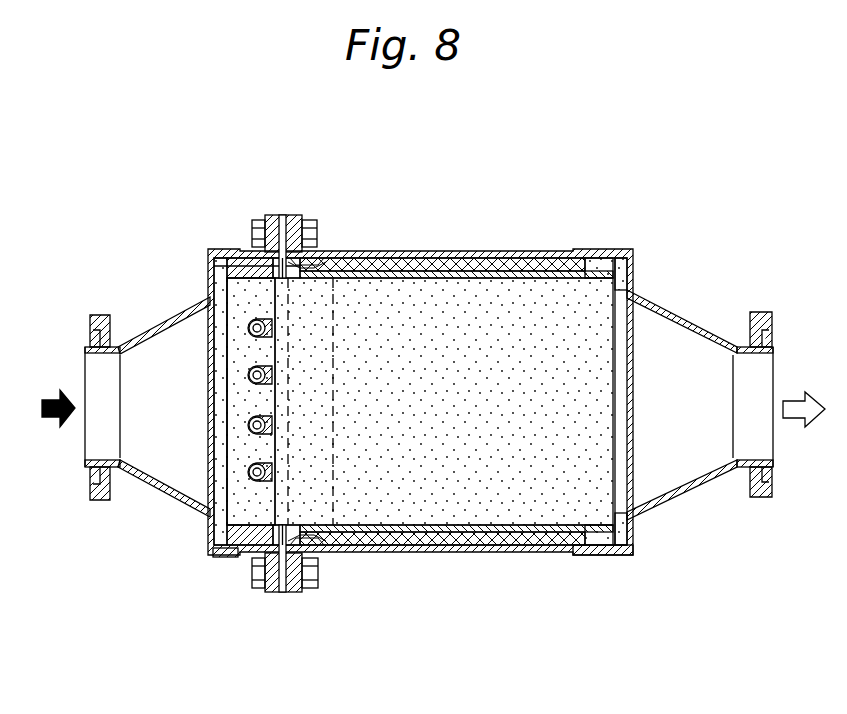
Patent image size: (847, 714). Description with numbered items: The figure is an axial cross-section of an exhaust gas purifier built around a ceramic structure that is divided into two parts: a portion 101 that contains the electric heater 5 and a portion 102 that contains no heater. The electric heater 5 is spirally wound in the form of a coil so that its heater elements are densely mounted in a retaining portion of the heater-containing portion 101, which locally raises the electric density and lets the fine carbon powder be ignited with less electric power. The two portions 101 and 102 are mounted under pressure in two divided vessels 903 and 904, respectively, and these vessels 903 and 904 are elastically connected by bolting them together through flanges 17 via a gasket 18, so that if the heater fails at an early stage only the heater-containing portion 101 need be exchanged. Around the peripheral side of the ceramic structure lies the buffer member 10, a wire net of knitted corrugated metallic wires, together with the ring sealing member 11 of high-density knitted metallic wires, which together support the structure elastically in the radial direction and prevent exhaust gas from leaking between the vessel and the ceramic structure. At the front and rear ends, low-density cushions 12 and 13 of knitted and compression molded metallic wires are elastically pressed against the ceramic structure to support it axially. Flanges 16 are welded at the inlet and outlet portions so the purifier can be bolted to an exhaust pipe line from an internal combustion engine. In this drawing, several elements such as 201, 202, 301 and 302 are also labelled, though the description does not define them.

The electric heater 5 is at (252, 428).
The buffer member 10 is at (467, 550).
The ring sealing member 11 is at (340, 546).
The cushion 12 is at (222, 557).
The cushion 13 is at (607, 545).
The flange 16 is at (100, 315).
The flange 17 is at (265, 218).
The gasket 18 is at (283, 215).
The portion containing electric heater 101 is at (227, 338).
The portion containing no electric heater 102 is at (615, 335).
The inlet end plate insulation 201 is at (233, 313).
The catalyst substrate 202 is at (415, 293).
The inlet end retaining block 301 is at (243, 258).
The wire mesh support layer 302 is at (477, 273).
The divided vessel 903 is at (187, 507).
The divided vessel 904 is at (405, 550).